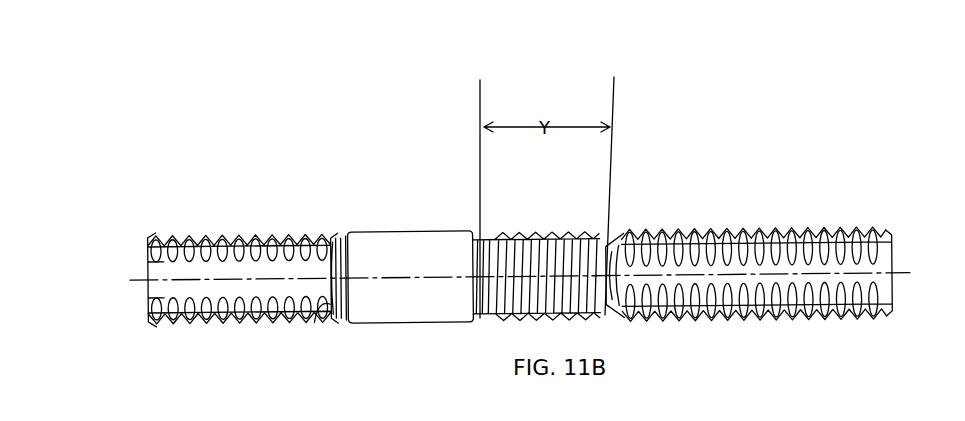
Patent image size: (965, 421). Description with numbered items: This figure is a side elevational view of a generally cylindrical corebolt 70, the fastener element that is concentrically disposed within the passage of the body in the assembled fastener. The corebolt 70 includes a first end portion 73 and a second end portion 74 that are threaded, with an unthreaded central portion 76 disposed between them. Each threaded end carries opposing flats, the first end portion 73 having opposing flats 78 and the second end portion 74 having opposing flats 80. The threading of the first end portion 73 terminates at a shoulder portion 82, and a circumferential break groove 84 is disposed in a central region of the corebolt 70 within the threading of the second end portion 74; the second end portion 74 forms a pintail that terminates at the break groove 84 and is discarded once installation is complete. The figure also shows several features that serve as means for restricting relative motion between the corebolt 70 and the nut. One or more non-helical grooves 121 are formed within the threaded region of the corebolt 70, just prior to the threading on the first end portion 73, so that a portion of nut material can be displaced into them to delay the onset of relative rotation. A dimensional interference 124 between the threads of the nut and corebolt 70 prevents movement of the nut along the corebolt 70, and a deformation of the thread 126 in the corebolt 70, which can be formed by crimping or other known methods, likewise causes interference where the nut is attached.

The corebolt 70 is at (771, 85).
The first end portion 73 is at (180, 235).
The non-helical grooves 121 is at (213, 242).
The opposing flats 78 is at (245, 235).
The dimensional interference 124 is at (329, 230).
The deformation of the thread 126 is at (312, 315).
The central portion 76 is at (412, 231).
The shoulder portion 82 is at (485, 232).
The break groove 84 is at (615, 300).
The opposing flats 80 is at (672, 232).
The second end portion 74 is at (875, 228).